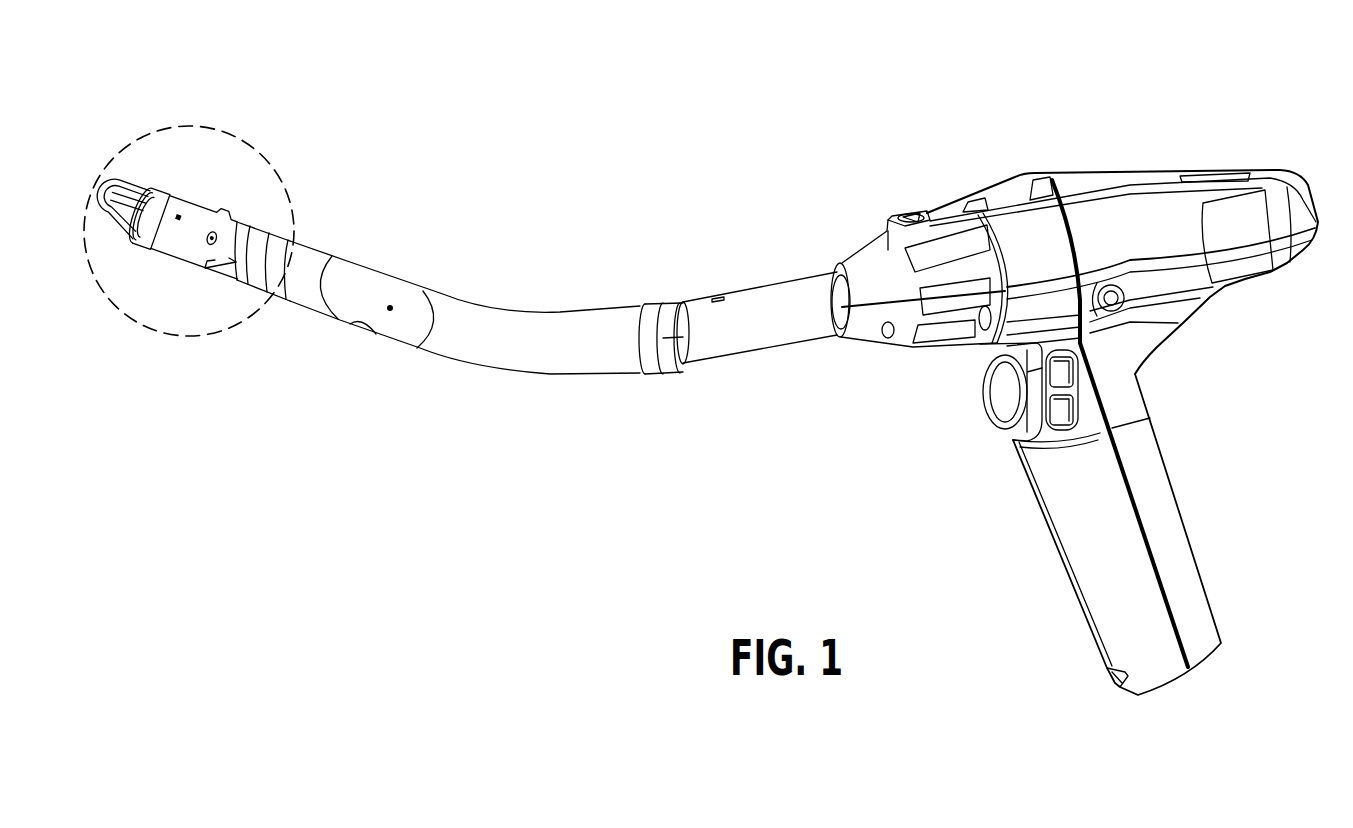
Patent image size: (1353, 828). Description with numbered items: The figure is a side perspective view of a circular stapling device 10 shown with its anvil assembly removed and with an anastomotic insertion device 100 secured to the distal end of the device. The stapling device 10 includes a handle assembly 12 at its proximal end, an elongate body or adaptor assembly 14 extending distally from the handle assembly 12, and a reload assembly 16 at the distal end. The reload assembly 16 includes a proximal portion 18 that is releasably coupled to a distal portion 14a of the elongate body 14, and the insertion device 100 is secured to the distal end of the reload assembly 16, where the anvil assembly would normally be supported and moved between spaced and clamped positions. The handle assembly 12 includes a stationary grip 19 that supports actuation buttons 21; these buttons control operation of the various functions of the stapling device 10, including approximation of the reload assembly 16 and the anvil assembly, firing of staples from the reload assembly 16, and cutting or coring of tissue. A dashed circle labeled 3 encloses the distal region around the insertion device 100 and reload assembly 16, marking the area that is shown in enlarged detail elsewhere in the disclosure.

The detail view region (FIG. 3) 3 is at (253, 147).
The circular stapling device 10 is at (635, 222).
The handle assembly 12 is at (1074, 397).
The elongate body or adaptor assembly 14 is at (498, 317).
The distal portion of the elongate body 14a is at (283, 242).
The reload assembly 16 is at (192, 197).
The proximal portion of the reload assembly 18 is at (213, 262).
The stationary grip 19 is at (1177, 525).
The actuation buttons 21 is at (980, 435).
The insertion device 100 is at (118, 187).